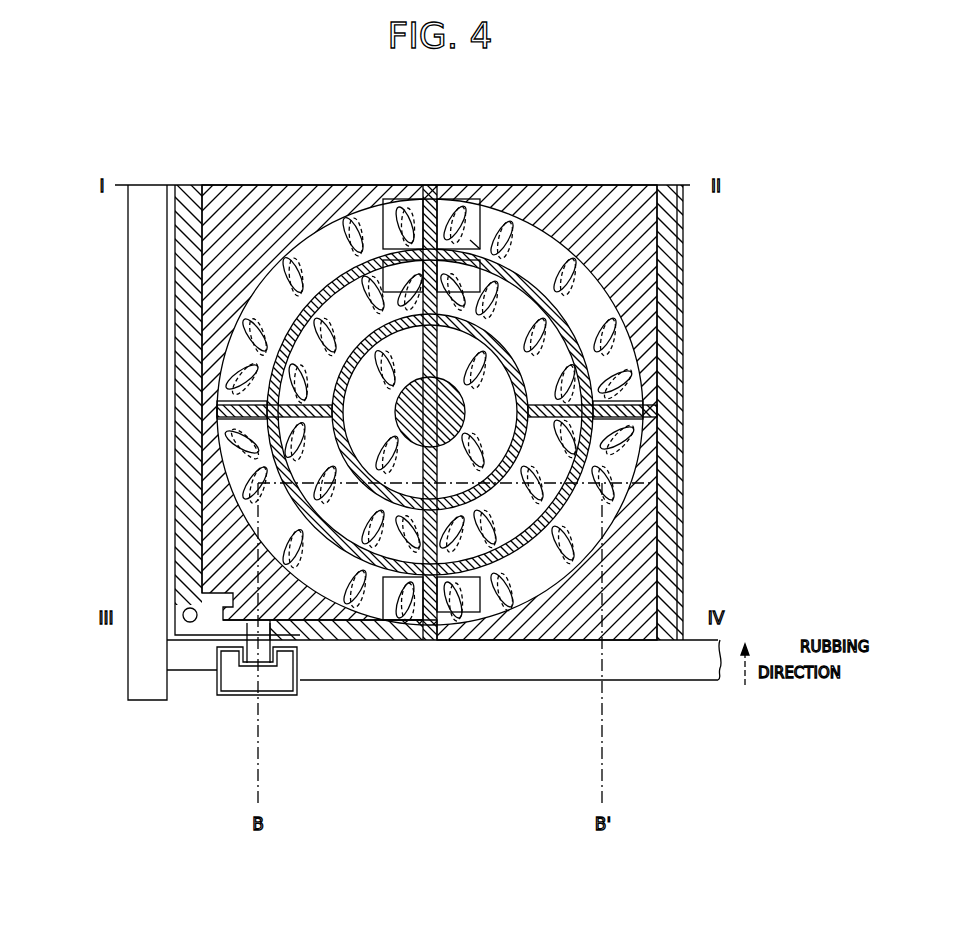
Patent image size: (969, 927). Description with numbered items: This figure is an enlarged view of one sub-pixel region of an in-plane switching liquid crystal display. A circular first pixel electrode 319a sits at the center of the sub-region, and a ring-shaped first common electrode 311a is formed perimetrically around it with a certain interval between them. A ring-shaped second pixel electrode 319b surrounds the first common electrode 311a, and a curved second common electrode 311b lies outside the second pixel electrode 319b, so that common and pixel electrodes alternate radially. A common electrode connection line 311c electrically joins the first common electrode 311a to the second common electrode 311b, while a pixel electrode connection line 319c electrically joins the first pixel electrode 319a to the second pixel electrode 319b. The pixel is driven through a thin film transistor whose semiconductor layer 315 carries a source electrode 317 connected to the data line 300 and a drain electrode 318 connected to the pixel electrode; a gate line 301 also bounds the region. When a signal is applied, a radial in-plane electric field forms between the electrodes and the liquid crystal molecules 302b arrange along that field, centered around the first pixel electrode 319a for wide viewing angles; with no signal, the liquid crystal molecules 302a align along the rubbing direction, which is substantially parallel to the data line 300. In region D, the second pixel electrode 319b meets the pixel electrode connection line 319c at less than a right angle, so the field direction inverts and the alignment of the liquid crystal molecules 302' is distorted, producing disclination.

The data line 300 is at (130, 254).
The gate line 301 is at (375, 668).
The liquid crystal molecules 302a is at (300, 246).
The liquid crystal molecules 302b is at (358, 250).
The liquid crystal molecules 302' is at (391, 191).
The first common electrode 311a is at (515, 443).
The second common electrode 311b is at (630, 548).
The common electrode connection line 311c is at (527, 426).
The semiconductor layer 315 is at (218, 663).
The source electrode 317 is at (230, 666).
The drain electrode 318 is at (265, 663).
The first pixel electrode 319a is at (457, 400).
The second pixel electrode 319b is at (442, 287).
The pixel electrode connection line 319c is at (442, 230).
The region D is at (470, 240).